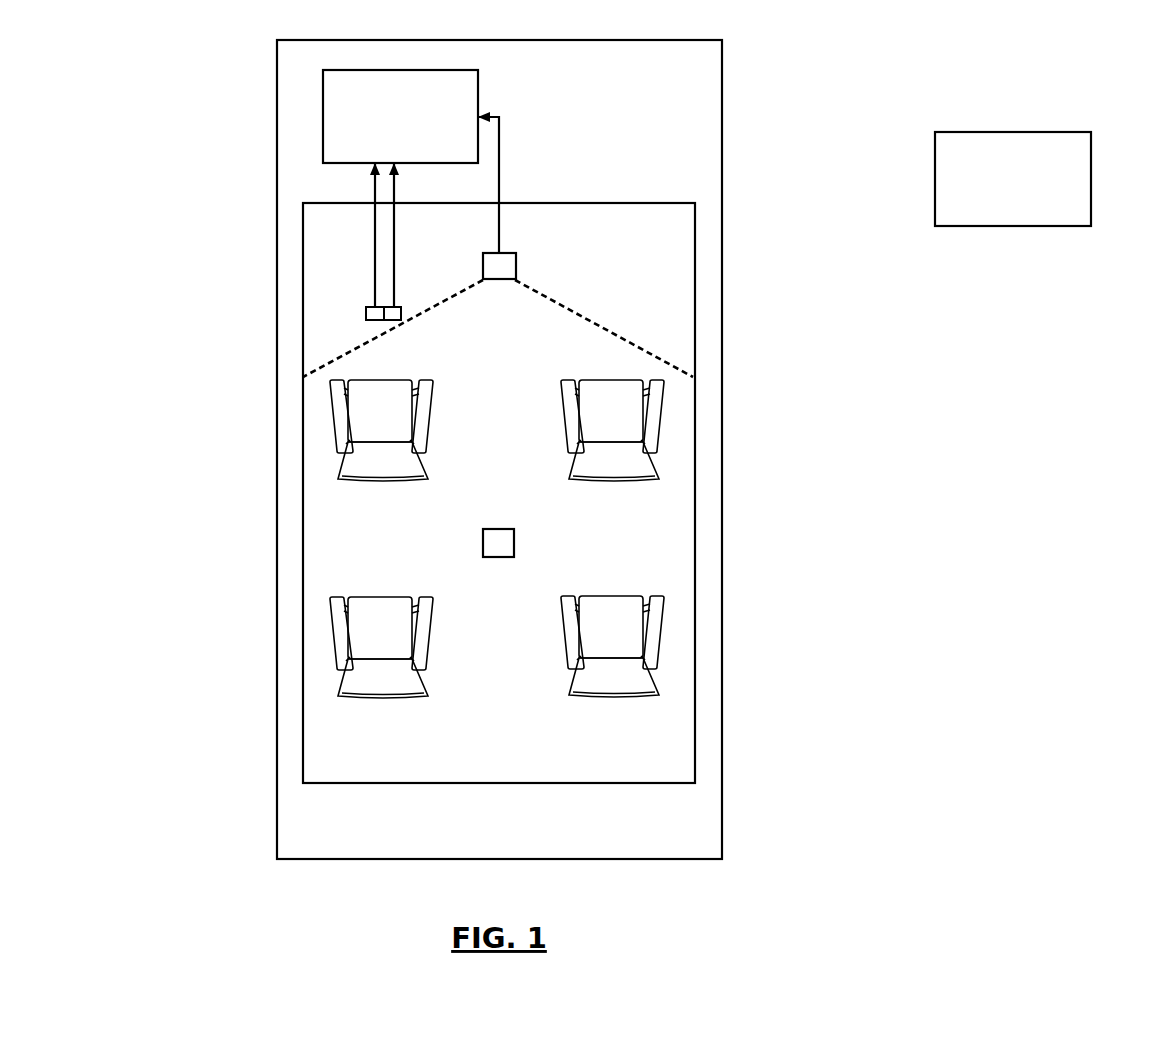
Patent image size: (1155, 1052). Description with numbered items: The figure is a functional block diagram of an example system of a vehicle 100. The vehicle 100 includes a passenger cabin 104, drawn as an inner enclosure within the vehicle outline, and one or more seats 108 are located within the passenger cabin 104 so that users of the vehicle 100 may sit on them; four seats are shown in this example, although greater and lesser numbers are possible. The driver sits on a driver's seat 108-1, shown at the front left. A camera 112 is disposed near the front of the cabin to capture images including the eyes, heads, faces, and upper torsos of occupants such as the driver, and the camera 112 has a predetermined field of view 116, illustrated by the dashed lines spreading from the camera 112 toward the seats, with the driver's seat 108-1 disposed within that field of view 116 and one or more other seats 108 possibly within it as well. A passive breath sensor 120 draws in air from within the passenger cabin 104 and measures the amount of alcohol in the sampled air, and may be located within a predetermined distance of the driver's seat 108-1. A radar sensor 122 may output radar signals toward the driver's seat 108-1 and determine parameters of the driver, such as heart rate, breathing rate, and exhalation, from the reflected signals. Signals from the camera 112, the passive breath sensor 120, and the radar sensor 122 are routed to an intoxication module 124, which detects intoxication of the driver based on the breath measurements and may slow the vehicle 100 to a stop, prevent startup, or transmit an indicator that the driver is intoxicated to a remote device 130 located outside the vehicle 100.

The vehicle 100 is at (722, 188).
The passenger cabin 104 is at (695, 357).
The seats 108 is at (658, 472).
The driver's seat 108-1 is at (340, 465).
The camera 112 is at (483, 260).
The field of view 116 is at (433, 312).
The passive breath sensor 120 is at (403, 320).
The radar sensor 122 is at (366, 312).
The intoxication module 124 is at (480, 102).
The remote device 130 is at (982, 131).